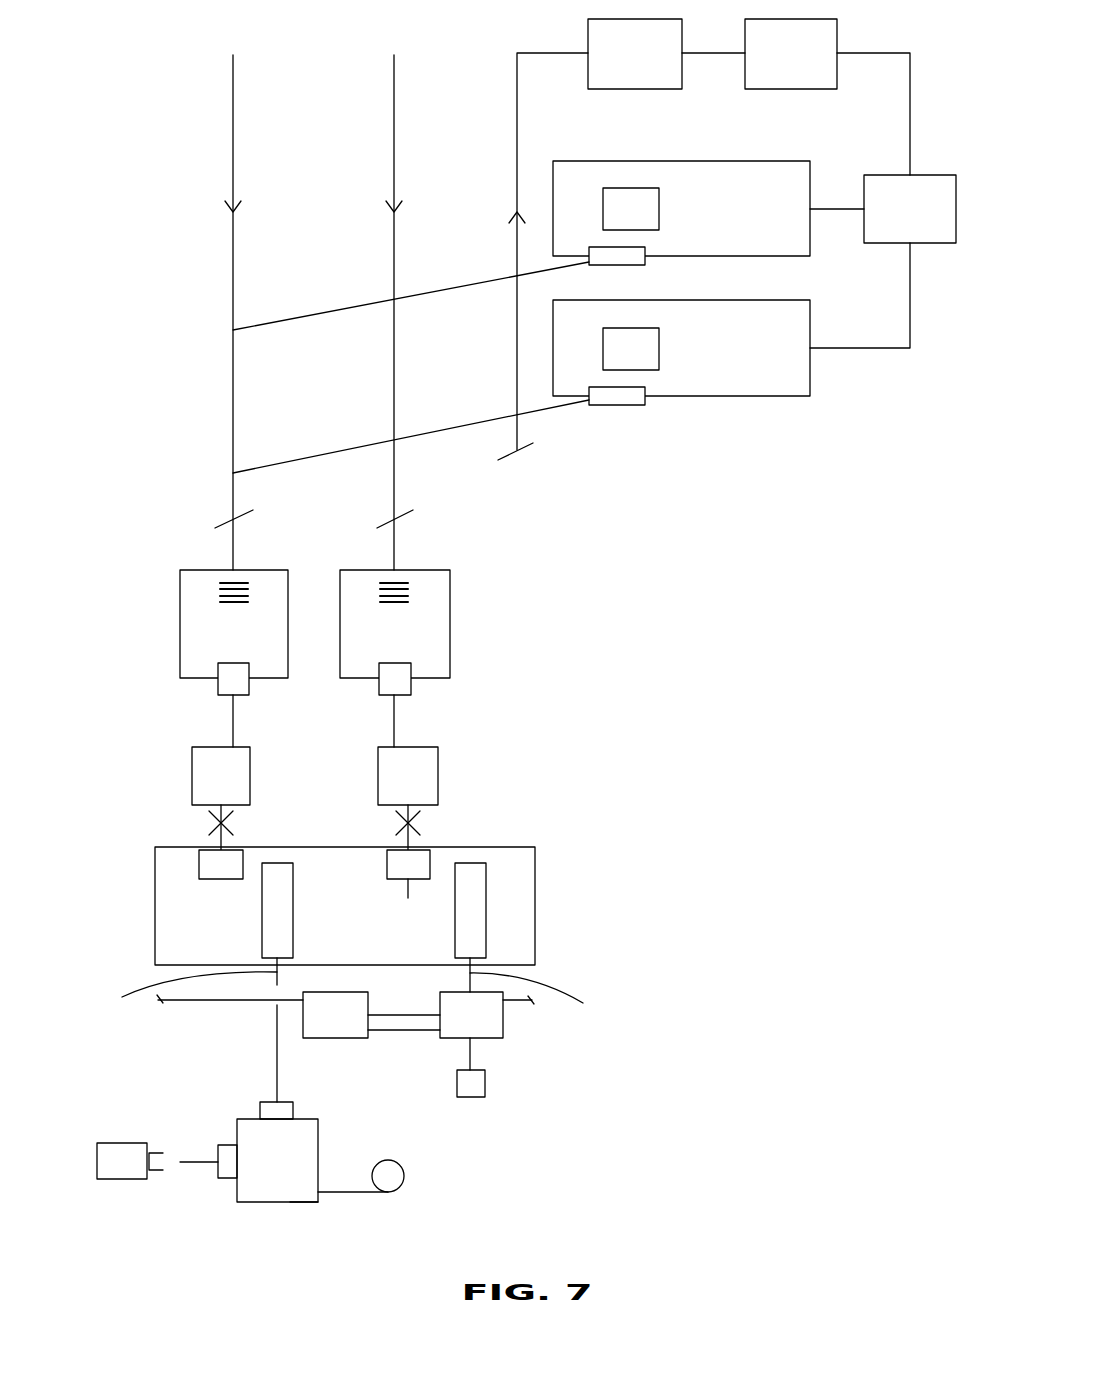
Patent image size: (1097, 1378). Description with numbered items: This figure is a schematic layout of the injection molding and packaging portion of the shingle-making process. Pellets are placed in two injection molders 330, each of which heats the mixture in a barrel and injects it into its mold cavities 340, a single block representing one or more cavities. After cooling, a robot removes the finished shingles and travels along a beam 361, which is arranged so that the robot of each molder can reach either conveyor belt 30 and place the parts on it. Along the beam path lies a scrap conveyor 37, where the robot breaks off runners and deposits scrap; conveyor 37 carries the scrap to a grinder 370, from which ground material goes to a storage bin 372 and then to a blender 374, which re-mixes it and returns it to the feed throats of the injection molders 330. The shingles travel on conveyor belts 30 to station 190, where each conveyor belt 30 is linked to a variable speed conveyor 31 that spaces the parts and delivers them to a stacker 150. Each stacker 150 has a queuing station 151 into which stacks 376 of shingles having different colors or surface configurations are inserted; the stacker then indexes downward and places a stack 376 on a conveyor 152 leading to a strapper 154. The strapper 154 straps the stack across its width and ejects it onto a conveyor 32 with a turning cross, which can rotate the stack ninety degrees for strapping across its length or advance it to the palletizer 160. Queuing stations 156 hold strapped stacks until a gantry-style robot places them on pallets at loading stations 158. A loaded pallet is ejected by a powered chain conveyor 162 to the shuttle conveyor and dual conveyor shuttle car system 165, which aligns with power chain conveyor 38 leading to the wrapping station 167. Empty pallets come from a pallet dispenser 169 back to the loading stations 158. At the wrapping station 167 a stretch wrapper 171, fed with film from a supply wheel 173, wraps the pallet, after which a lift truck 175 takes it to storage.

The conveyor belt 30 is at (232, 388).
The variable speed conveyor 31 is at (232, 557).
The conveyor with turning cross 32 is at (190, 818).
The conveyor 37 is at (518, 430).
The power chain conveyor 38 is at (277, 1063).
The stacker 150 is at (180, 600).
The queuing station 151 is at (218, 683).
The conveyor 152 is at (233, 707).
The strapper 154 is at (192, 792).
The queuing station 156 is at (199, 862).
The loading station 158 is at (262, 910).
The palletizer 160 is at (535, 902).
The powered chain conveyor 162 is at (349, 1004).
The shuttle conveyor and dual conveyor shuttle car system 165 is at (294, 1008).
The wrapping station 167 is at (310, 1203).
The pallet dispenser 169 is at (485, 1085).
The stretch wrapper 171 is at (256, 1173).
The supply wheel 173 is at (407, 1180).
The lift truck 175 is at (120, 1180).
The station 190 is at (656, 712).
The injection molder 330 is at (724, 222).
The mold cavity 340 is at (611, 222).
The beam 361 is at (310, 314).
The grinder 370 is at (614, 66).
The storage bin 372 is at (770, 66).
The blender 374 is at (889, 222).
The stack 376 is at (262, 597).